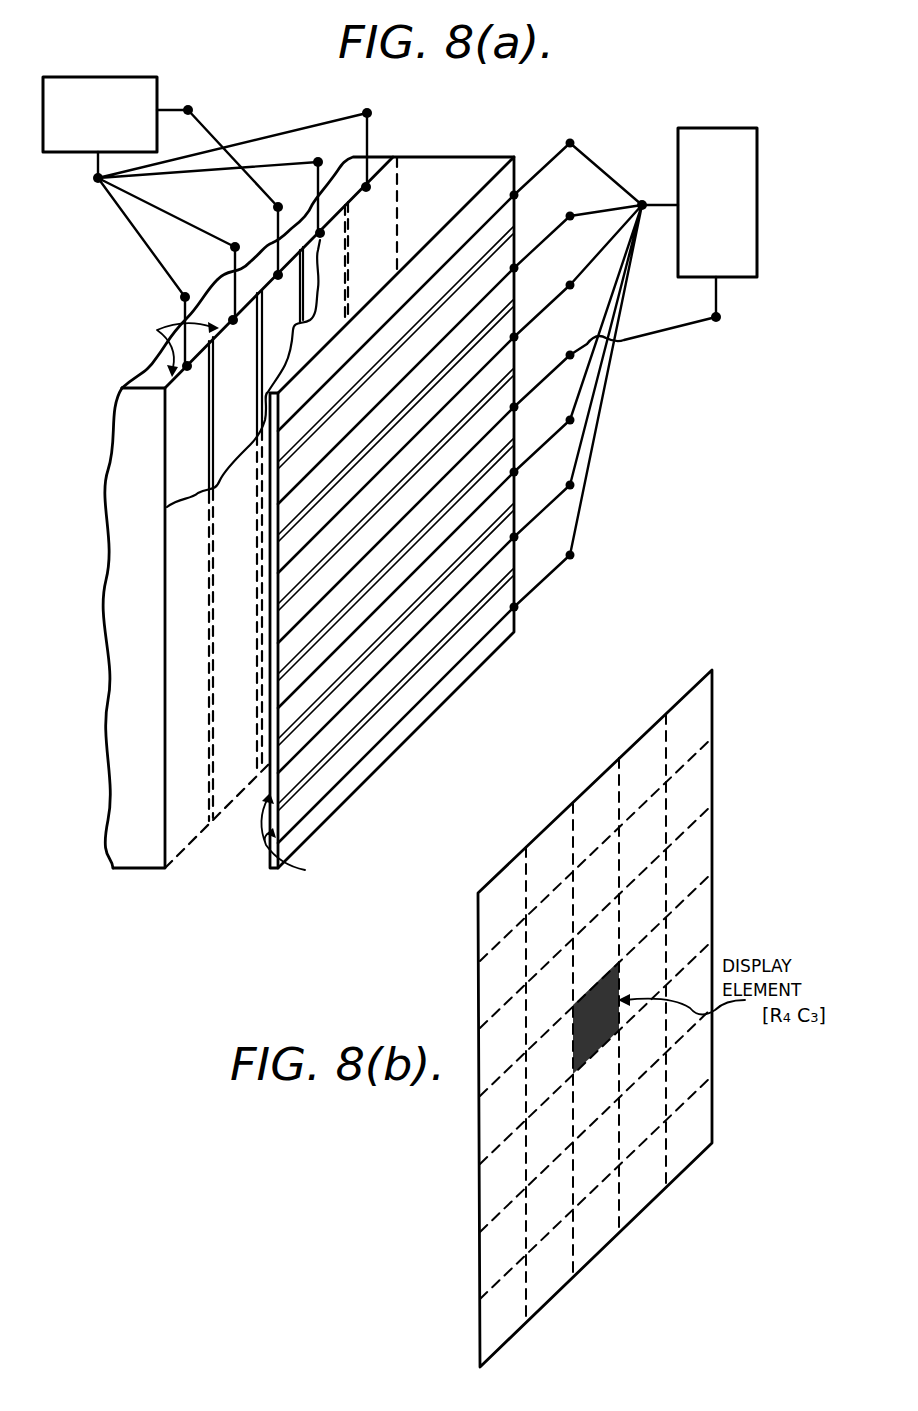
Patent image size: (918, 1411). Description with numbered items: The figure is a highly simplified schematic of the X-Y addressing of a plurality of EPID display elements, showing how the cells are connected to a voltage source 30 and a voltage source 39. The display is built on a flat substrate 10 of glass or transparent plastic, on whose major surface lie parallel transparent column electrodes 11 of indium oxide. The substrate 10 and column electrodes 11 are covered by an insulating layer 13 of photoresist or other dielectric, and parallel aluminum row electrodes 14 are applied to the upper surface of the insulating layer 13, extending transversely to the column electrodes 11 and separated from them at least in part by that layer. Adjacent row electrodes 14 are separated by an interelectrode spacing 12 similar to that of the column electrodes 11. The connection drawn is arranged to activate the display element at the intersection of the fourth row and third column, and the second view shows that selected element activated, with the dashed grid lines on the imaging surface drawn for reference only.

The voltage source 39 is at (122, 77).
The voltage source 30 is at (758, 152).
The substrate 10 is at (125, 443).
The column electrodes 11 is at (227, 443).
The interelectrode spacing 12 is at (253, 338).
The insulating layer 13 is at (222, 840).
The row electrodes 14 is at (425, 640).